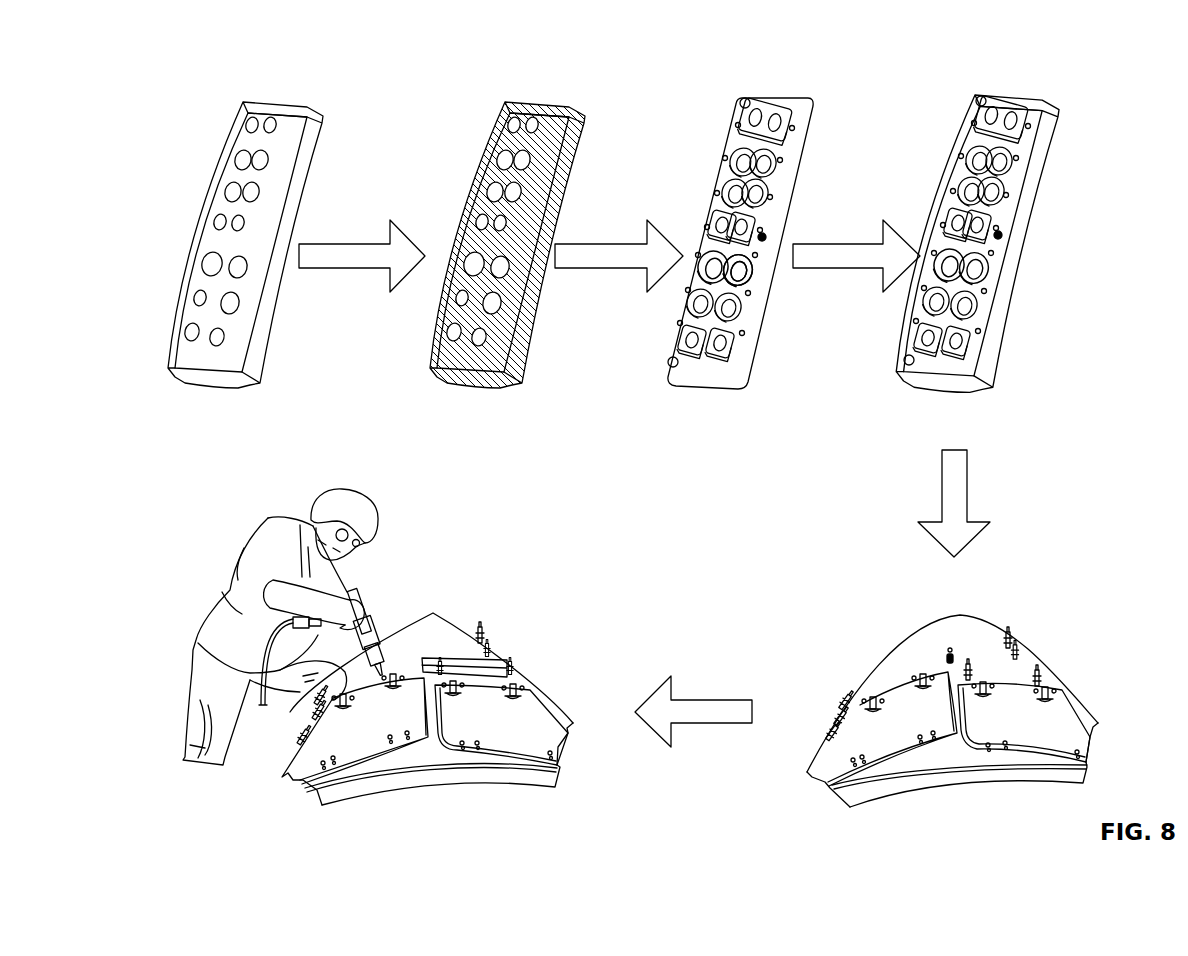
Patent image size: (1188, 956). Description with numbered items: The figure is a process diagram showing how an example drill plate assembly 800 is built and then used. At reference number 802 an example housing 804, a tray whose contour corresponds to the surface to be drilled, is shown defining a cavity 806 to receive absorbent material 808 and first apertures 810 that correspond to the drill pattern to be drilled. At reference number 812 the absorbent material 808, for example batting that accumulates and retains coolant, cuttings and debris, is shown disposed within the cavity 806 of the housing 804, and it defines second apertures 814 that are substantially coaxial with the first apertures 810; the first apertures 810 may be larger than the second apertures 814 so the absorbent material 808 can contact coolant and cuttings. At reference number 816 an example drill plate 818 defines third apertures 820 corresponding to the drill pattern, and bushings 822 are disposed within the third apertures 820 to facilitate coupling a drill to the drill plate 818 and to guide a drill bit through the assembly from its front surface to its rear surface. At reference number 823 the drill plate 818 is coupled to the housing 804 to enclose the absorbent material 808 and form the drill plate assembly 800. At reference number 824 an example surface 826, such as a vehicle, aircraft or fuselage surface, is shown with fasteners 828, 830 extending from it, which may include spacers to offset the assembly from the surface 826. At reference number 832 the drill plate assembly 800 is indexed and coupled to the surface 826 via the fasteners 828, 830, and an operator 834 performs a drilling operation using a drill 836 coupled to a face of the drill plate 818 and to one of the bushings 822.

The drill plate assembly 800 is at (1068, 100).
The housing illustration reference 802 is at (247, 252).
The housing 804 is at (300, 103).
The cavity 806 is at (213, 366).
The absorbent material 808 is at (552, 102).
The first apertures 810 is at (228, 340).
The absorbent material illustration reference 812 is at (596, 227).
The second apertures 814 is at (490, 340).
The drill plate illustration reference 816 is at (770, 226).
The drill plate 818 is at (798, 106).
The third apertures 820 is at (735, 368).
The bushings 822 is at (752, 281).
The assembled drill plate illustration reference 823 is at (1002, 79).
The surface illustration reference 824 is at (1050, 606).
The surface 826 is at (903, 653).
The fastener 828 is at (1040, 670).
The fastener 830 is at (845, 695).
The drilling operation illustration reference 832 is at (391, 647).
The operator 834 is at (267, 542).
The drill 836 is at (362, 602).